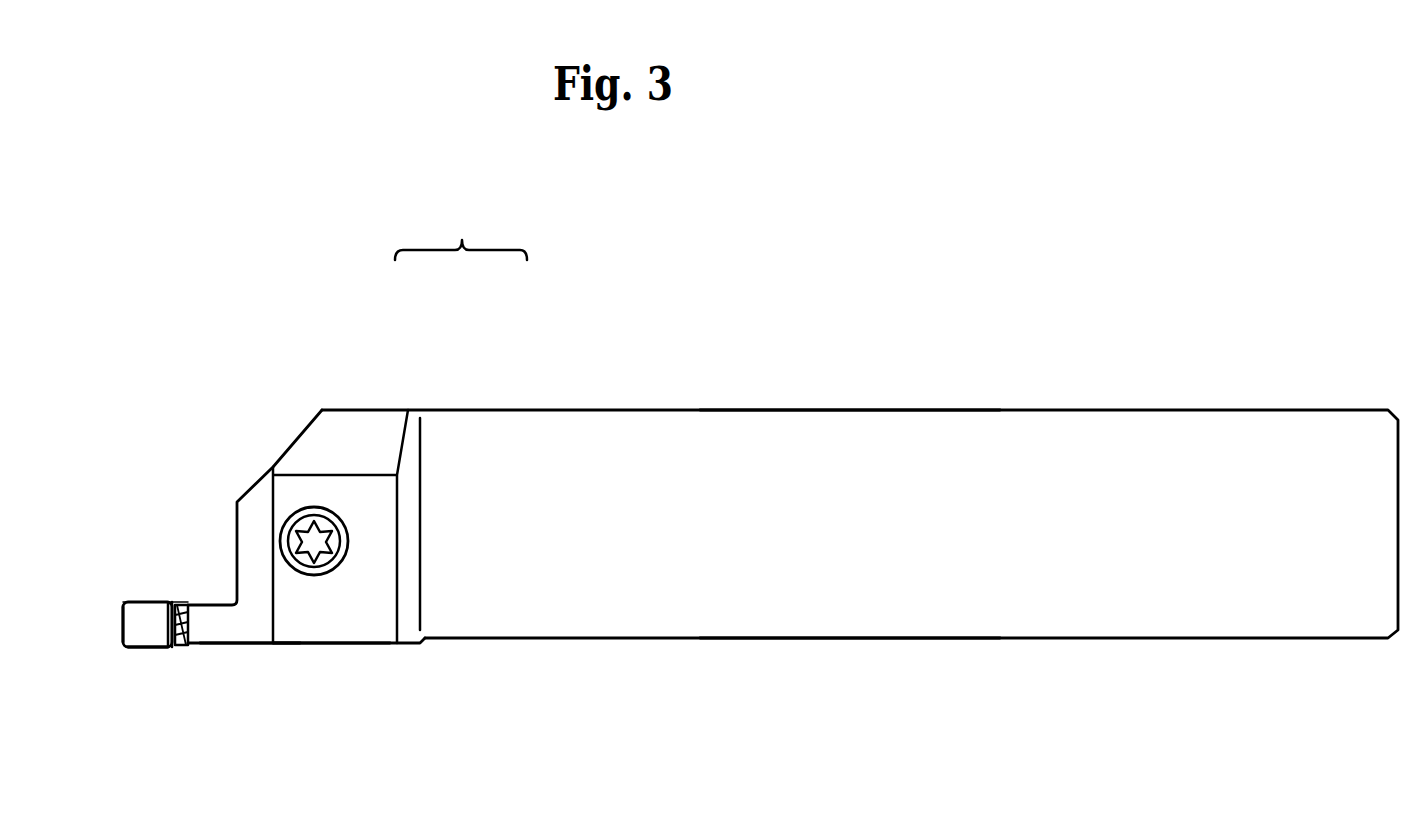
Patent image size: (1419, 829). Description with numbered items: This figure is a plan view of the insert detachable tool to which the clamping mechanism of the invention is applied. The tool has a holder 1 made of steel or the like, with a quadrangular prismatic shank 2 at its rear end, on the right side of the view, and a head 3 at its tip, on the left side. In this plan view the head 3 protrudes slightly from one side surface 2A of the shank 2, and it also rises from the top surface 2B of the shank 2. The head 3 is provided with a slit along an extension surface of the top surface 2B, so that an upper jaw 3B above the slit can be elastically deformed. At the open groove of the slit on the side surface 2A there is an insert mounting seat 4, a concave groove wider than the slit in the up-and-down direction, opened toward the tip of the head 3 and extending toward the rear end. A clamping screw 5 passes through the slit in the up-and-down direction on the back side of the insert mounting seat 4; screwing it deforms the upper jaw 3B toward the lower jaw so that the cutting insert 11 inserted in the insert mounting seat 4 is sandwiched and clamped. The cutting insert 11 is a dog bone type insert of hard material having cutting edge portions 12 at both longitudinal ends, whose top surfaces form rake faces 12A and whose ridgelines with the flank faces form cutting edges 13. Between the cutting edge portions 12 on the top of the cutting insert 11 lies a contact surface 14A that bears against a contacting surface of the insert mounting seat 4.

The holder 1 is at (461, 232).
The shank 2 is at (540, 372).
The side surface 2A is at (855, 640).
The top surface 2B is at (848, 426).
The head 3 is at (376, 372).
The upper jaw 3B is at (226, 628).
The insert mounting seat 4 is at (281, 660).
The clamping screw 5 is at (338, 558).
The cutting insert 11 is at (155, 578).
The cutting edge portions 12 is at (124, 580).
The rake faces 12A is at (141, 638).
The cutting edges 13 is at (122, 625).
The contact surface 14A is at (182, 603).